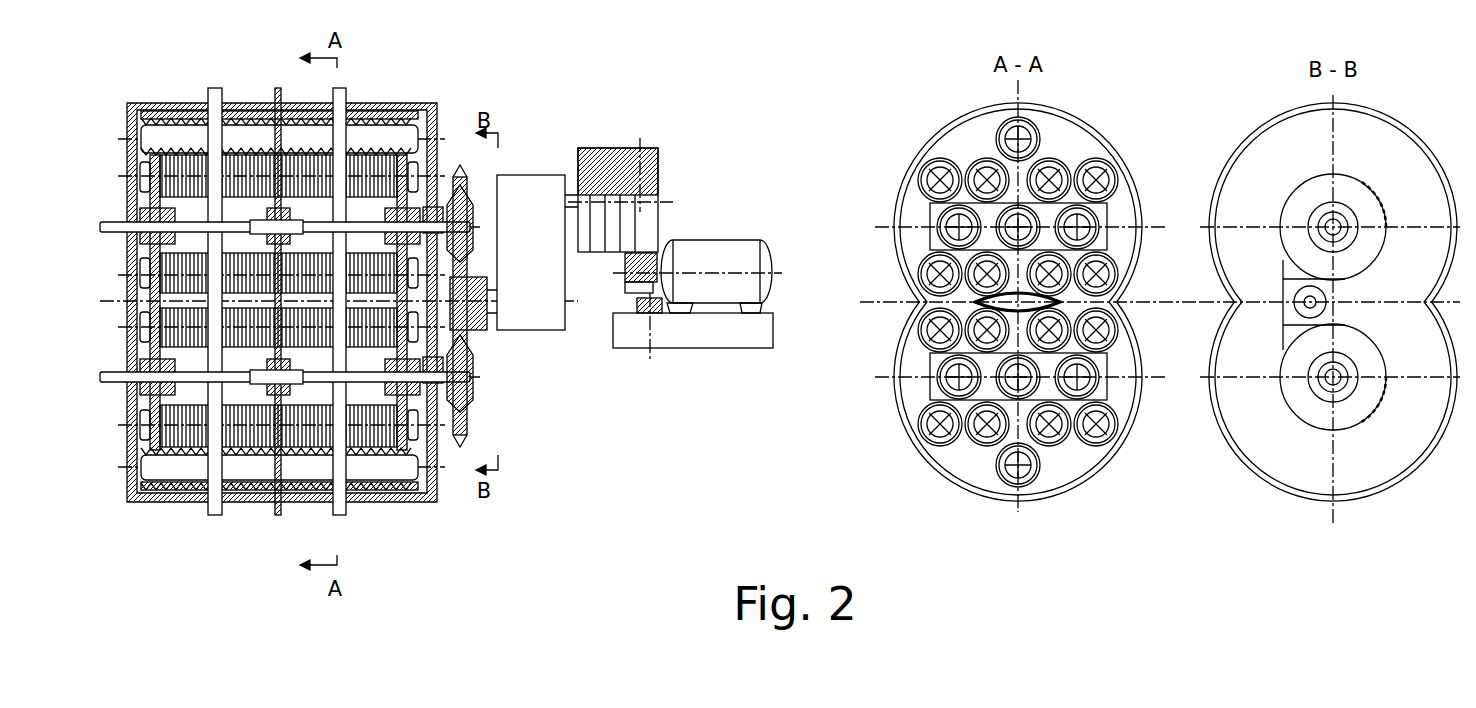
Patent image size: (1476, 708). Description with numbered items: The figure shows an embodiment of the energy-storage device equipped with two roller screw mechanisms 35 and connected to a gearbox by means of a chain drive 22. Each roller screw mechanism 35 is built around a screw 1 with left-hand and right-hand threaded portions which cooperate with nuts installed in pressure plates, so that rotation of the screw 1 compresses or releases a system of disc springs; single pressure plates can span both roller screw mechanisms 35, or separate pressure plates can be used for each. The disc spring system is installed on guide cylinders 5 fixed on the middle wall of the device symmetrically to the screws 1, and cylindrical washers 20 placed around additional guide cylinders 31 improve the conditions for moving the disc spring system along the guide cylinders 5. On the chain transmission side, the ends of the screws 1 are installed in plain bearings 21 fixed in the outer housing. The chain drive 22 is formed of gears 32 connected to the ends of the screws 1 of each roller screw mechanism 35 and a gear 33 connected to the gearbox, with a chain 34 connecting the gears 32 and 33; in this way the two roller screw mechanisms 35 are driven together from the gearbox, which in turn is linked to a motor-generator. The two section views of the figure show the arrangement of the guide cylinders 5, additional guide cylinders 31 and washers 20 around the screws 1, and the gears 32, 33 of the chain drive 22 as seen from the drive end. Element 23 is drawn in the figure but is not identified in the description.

The screw 1 is at (1000, 387).
The guide cylinders 5 is at (973, 314).
The cylindrical washers 20 is at (200, 103).
The plain bearings 21 is at (435, 205).
The chain drive 22 is at (458, 177).
The gearbox 23 is at (478, 277).
The additional guide cylinders 31 is at (928, 333).
The gears 32 is at (1365, 183).
The gear 33 is at (1298, 315).
The chain 34 is at (1376, 338).
The roller screw mechanism 35 is at (145, 106).